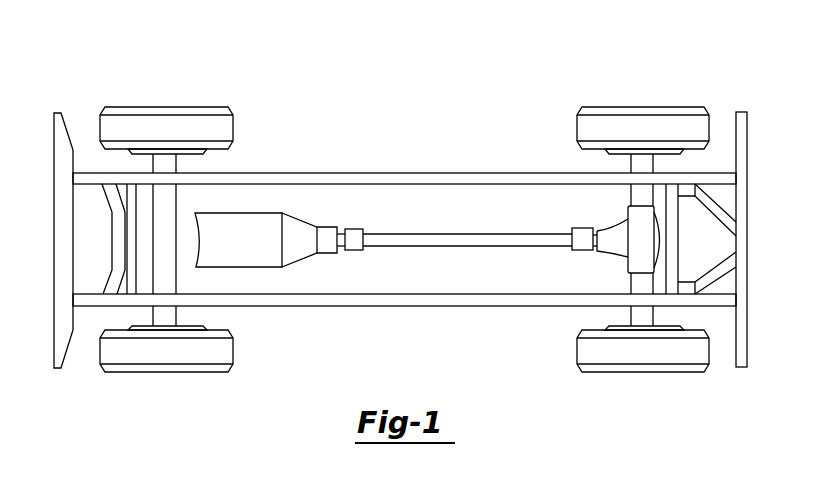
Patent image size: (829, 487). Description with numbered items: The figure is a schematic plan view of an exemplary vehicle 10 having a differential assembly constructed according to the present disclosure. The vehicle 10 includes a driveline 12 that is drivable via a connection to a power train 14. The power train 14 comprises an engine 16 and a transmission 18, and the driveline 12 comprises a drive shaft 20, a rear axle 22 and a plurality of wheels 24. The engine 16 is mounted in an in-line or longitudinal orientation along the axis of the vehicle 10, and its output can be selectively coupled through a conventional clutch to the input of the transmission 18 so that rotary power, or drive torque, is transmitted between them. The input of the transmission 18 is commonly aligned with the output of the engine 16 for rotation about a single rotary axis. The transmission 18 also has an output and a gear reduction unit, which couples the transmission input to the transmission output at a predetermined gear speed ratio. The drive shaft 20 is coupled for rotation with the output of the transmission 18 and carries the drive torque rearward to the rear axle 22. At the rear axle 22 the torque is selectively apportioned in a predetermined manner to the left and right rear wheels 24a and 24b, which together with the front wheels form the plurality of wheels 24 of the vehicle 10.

The vehicle 10 is at (358, 128).
The driveline 12 is at (593, 222).
The power train 14 is at (255, 280).
The engine 16 is at (225, 251).
The transmission 18 is at (293, 230).
The drive shaft 20 is at (457, 240).
The rear axle 22 is at (623, 263).
The wheels 24 is at (160, 385).
The left rear wheel 24a is at (643, 355).
The right rear wheel 24b is at (643, 125).